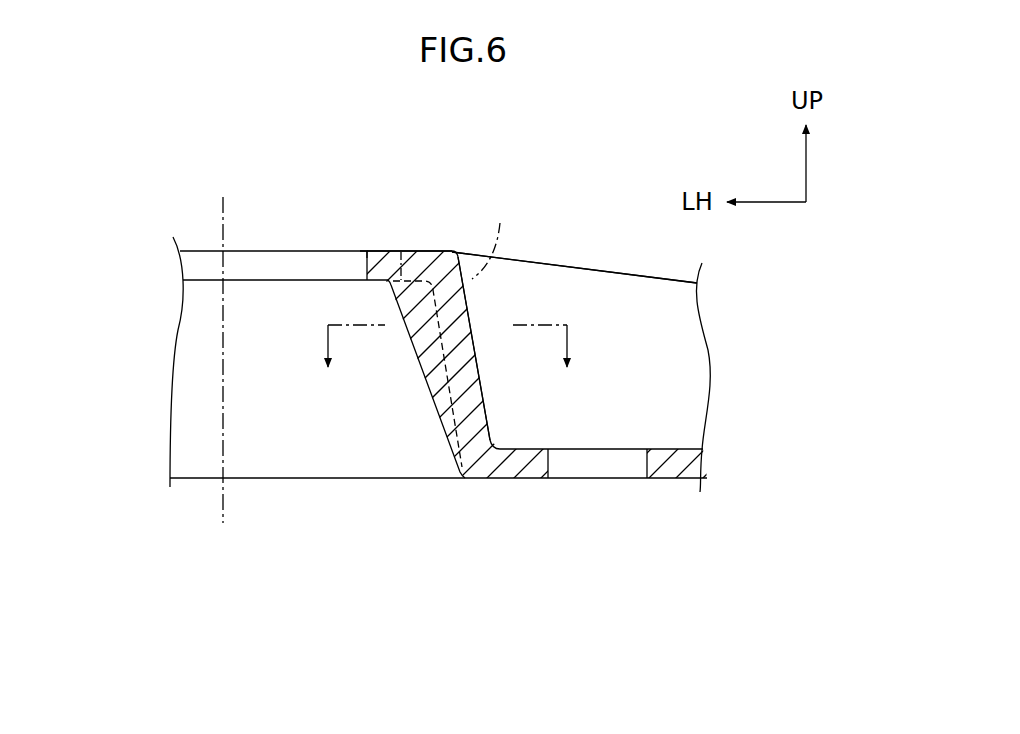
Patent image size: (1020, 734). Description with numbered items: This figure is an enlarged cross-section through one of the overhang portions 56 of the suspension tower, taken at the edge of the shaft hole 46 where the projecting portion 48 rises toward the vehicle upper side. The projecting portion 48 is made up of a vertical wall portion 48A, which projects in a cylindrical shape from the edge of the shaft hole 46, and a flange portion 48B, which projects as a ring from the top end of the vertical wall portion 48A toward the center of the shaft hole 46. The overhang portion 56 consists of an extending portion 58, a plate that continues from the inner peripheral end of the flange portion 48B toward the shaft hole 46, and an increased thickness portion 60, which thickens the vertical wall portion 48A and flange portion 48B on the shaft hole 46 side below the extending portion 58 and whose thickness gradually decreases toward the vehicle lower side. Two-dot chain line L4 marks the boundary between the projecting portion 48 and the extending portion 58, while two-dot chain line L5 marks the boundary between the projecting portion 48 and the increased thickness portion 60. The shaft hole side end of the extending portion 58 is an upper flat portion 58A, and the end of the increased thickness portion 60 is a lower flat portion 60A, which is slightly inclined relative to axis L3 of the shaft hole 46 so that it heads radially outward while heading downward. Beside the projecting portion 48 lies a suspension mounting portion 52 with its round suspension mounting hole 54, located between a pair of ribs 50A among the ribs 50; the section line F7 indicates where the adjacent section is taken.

The shaft hole 46 is at (285, 430).
The projecting portion 48 is at (487, 400).
The vertical wall portion 48A is at (470, 305).
The flange portion 48B is at (421, 251).
The rib 50 is at (581, 333).
The ribs 50A is at (570, 267).
The suspension mounting portion 52 is at (667, 450).
The suspension mounting hole 54 is at (595, 462).
The overhang portion 56 is at (385, 372).
The extending portion 58 is at (373, 250).
The upper flat portion 58A is at (366, 250).
The increased thickness portion 60 is at (397, 304).
The lower flat portion 60A is at (426, 375).
The axis of the shaft hole L3 is at (220, 215).
The two-dot chain line L4 is at (401, 266).
The two-dot chain line L5 is at (491, 238).
The section line F7 is at (448, 363).